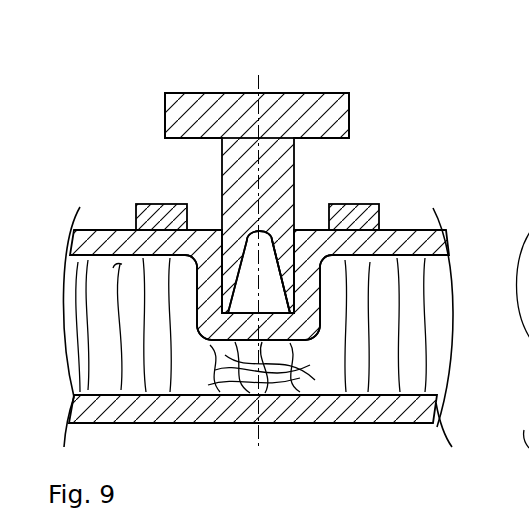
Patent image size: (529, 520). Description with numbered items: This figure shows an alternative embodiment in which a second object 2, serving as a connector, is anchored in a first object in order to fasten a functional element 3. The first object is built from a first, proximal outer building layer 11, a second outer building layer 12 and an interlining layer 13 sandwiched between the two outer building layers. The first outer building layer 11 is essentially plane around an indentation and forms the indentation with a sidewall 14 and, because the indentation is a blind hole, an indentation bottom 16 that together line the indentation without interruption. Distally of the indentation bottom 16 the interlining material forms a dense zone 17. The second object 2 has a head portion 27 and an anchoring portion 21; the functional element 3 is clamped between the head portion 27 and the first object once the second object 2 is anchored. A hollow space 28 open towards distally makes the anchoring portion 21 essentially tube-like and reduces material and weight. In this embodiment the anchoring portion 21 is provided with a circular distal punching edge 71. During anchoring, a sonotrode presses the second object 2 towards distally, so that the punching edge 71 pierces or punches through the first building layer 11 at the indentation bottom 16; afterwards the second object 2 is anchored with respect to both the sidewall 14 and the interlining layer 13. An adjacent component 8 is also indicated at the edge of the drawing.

The second object 2 is at (252, 285).
The functional element 3 is at (368, 217).
The adjacent component 8 is at (528, 303).
The first outer building layer 11 is at (427, 243).
The second outer building layer 12 is at (418, 413).
The interlining layer 13 is at (412, 349).
The sidewall 14 is at (308, 299).
The indentation bottom 16 is at (230, 338).
The dense zone 17 is at (292, 373).
The anchoring portion 21 is at (240, 220).
The head portion 27 is at (330, 122).
The hollow space 28 is at (270, 303).
The distal punching edge 71 is at (281, 255).